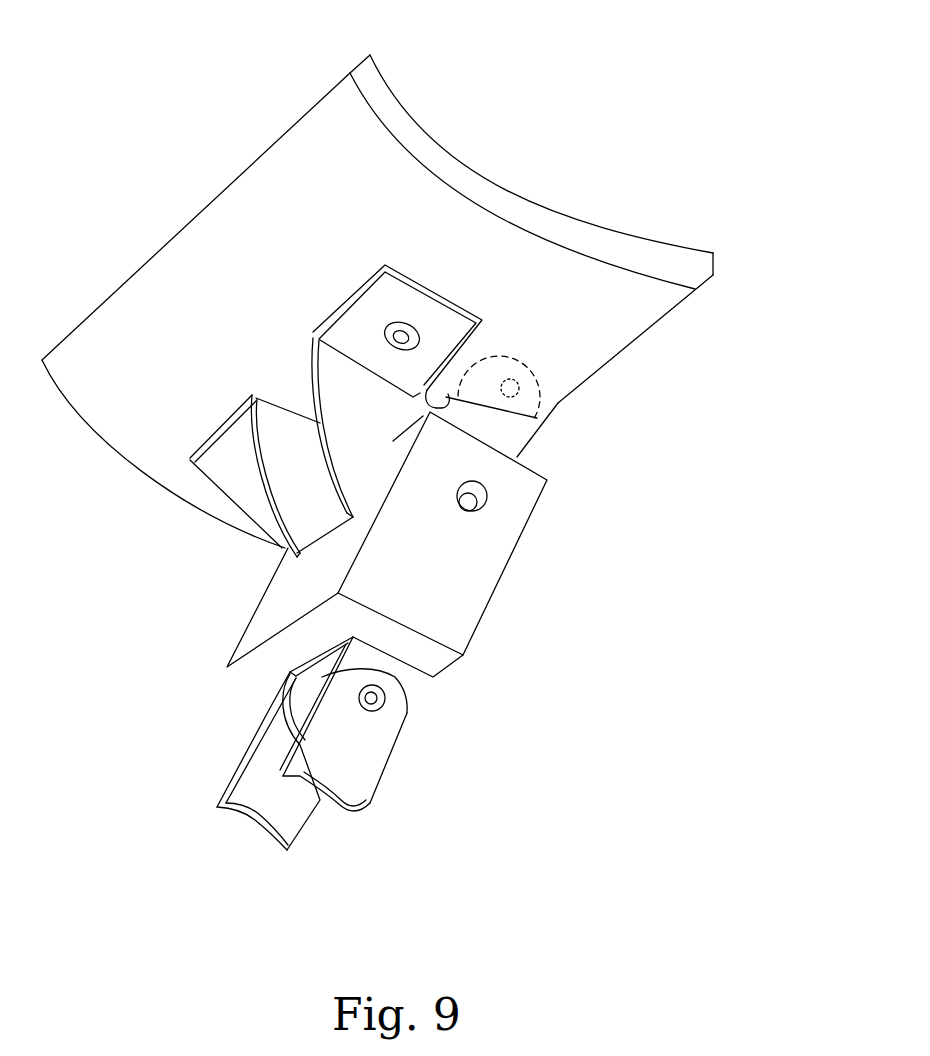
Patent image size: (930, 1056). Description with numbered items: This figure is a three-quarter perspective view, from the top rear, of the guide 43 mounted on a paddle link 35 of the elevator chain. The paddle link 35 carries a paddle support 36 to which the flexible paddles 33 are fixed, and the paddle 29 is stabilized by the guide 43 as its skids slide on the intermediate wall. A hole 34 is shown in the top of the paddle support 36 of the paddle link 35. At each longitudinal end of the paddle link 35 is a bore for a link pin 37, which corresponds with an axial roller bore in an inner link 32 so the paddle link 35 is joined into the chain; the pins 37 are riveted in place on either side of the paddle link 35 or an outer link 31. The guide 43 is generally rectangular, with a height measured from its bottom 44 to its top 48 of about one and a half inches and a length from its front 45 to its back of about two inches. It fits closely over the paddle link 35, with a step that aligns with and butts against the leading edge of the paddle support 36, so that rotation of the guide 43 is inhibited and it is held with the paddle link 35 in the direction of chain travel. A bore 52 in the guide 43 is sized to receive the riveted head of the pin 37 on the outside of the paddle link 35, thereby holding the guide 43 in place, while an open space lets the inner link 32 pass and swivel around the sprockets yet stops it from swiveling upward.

The paddle 29 is at (703, 197).
The outer link 31 is at (352, 760).
The inner link 32 is at (375, 660).
The flexible paddle 33 is at (585, 217).
The mounting hole 34 is at (388, 330).
The paddle link 35 is at (503, 435).
The paddle support 36 is at (362, 407).
The link pin 37 is at (482, 485).
The guide 43 is at (455, 572).
The bottom 44 is at (490, 651).
The front 45 is at (247, 684).
The top 48 is at (267, 594).
The bore 52 is at (482, 510).